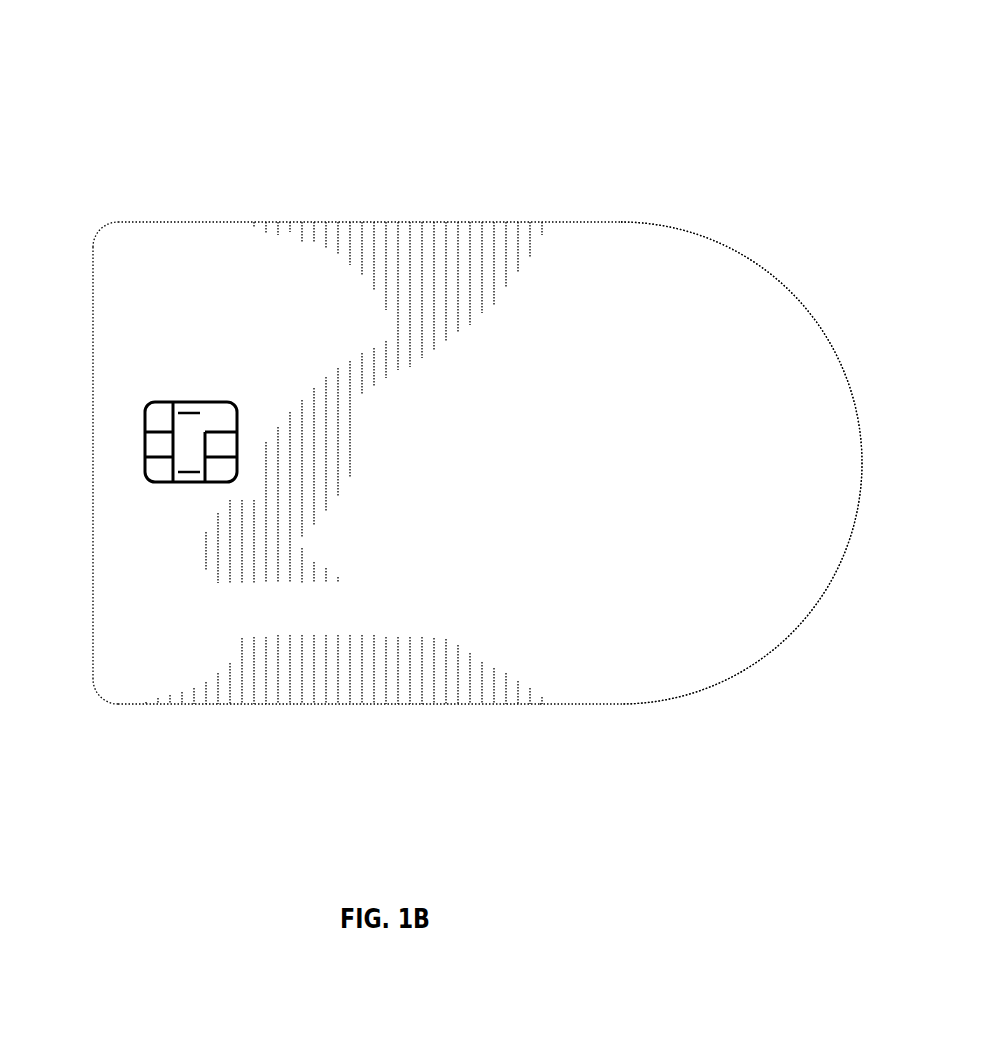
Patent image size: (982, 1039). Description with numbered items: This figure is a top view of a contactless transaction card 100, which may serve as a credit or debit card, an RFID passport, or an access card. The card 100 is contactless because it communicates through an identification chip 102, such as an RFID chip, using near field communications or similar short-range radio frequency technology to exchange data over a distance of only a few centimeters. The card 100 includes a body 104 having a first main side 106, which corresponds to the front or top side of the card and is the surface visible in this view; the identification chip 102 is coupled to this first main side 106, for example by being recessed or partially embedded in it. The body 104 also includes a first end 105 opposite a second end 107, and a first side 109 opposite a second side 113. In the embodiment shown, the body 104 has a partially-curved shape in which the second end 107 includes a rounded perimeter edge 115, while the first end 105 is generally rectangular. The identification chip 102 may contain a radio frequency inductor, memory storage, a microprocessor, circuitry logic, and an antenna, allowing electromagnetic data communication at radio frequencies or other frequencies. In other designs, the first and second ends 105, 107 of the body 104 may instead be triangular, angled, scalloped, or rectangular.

The transaction card 100 is at (375, 118).
The identification chip 102 is at (184, 402).
The body 104 is at (569, 636).
The first end 105 is at (96, 358).
The first main side 106 is at (666, 281).
The second end 107 is at (835, 549).
The first side 109 is at (445, 224).
The second side 113 is at (478, 704).
The rounded perimeter edge 115 is at (801, 307).